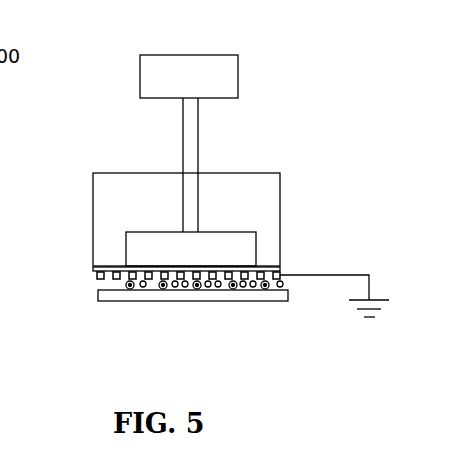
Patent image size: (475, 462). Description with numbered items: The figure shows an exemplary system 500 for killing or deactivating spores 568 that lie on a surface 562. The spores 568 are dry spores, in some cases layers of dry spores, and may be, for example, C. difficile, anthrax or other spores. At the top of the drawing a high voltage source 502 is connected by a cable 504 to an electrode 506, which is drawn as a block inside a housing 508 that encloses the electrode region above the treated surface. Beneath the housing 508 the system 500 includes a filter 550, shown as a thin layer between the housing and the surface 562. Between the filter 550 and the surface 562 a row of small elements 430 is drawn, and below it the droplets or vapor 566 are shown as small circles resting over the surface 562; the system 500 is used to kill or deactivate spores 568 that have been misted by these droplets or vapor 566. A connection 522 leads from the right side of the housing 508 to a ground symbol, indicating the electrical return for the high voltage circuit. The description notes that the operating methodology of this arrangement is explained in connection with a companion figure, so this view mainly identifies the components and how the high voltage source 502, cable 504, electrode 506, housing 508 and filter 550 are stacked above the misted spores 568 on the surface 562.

The system 500 is at (322, 87).
The high voltage source 502 is at (238, 53).
The cable 504 is at (198, 138).
The housing 508 is at (280, 199).
The electrode 506 is at (256, 241).
The filter 550 is at (95, 272).
The electrodes 430 is at (122, 277).
The droplets or vapor 566 is at (125, 282).
The surface 562 is at (240, 305).
The spores 568 is at (150, 292).
The ground connection 522 is at (369, 290).